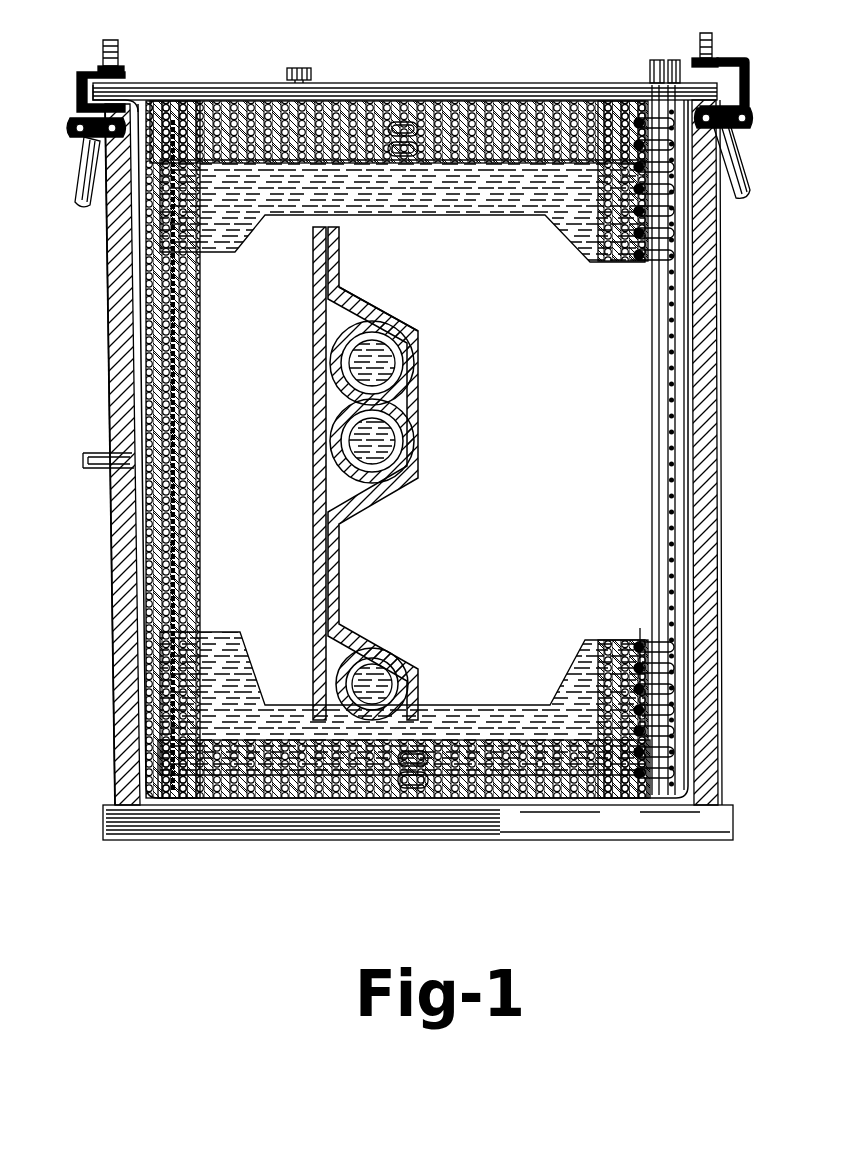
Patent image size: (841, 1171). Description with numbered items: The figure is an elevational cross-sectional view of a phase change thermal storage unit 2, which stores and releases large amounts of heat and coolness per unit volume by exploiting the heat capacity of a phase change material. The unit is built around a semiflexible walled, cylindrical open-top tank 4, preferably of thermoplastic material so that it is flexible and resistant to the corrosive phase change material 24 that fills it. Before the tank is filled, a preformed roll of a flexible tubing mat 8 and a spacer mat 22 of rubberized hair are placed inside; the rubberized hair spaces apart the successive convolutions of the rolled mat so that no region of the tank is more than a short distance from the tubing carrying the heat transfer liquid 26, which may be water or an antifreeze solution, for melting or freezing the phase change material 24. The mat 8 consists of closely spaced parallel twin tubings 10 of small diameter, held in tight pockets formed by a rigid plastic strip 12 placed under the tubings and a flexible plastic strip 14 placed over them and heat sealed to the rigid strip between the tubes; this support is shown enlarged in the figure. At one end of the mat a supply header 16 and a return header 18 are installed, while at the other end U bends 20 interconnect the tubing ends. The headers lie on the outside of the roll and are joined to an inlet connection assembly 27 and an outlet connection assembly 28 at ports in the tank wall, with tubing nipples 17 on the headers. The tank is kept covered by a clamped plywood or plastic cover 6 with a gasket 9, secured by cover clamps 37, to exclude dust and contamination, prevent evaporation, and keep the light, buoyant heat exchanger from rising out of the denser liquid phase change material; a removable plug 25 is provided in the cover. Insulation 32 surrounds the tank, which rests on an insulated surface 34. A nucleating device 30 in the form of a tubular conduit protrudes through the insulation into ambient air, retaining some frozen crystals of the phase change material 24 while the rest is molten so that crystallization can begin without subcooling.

The phase change thermal storage unit 2 is at (112, 762).
The open-top tank 4 is at (138, 688).
The cover 6 is at (193, 98).
The flexible tubing mat 8 is at (617, 248).
The gasket 9 is at (138, 98).
The twin tubings 10 is at (397, 420).
The rigid plastic strip 12 is at (318, 399).
The flexible plastic strip 14 is at (418, 421).
The supply header 16 is at (650, 407).
The tubing nipples 17 is at (650, 326).
The return header 18 is at (675, 420).
The 'U' bends 20 is at (414, 114).
The rubberized hair mat 22 is at (608, 240).
The phase change material 24 is at (557, 205).
The removable plug 25 is at (302, 68).
The heat transfer liquid 26 is at (385, 332).
The inlet connection assembly 27 is at (653, 68).
The outlet connection assembly 28 is at (674, 64).
The nucleating device 30 is at (96, 466).
The insulation 32 is at (123, 598).
The insulated surface 34 is at (705, 828).
The cover clamps 37 is at (80, 138).